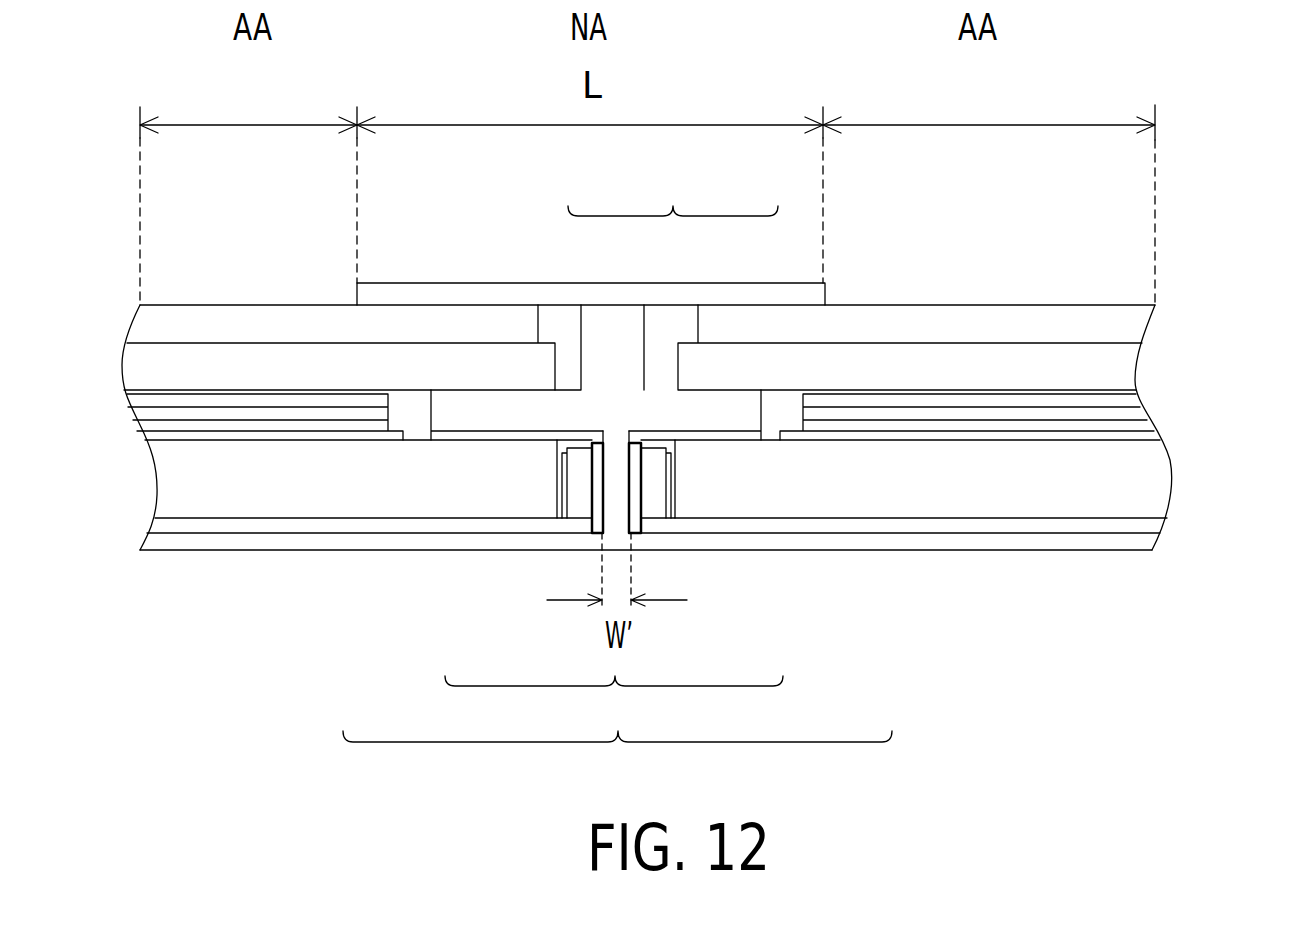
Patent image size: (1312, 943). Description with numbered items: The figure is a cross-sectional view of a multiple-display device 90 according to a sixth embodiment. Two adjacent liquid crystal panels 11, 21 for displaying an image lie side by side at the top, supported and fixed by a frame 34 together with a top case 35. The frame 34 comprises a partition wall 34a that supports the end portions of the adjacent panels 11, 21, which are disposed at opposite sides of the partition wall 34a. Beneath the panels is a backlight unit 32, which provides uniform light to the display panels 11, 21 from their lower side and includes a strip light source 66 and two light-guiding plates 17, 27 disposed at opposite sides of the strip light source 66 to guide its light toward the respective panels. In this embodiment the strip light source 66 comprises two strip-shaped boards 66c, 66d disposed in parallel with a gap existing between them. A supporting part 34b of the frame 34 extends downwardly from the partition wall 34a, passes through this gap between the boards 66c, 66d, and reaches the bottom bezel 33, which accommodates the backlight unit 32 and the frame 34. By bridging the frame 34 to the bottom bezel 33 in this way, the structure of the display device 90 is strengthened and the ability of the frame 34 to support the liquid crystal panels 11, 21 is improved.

The multiple-display device 90 is at (1310, 99).
The liquid crystal panel 11 is at (260, 296).
The liquid crystal panel 21 is at (1023, 296).
The top case 35 is at (455, 295).
The frame 34 is at (673, 189).
The partition wall 34a is at (610, 325).
The supporting part 34b is at (617, 470).
The light-guiding plate 17 is at (370, 497).
The light-guiding plate 27 is at (857, 497).
The strip light source 66 is at (614, 588).
The strip-shaped board 66c is at (598, 492).
The strip-shaped board 66d is at (640, 493).
The backlight unit 32 is at (653, 663).
The bottom bezel 33 is at (1040, 538).